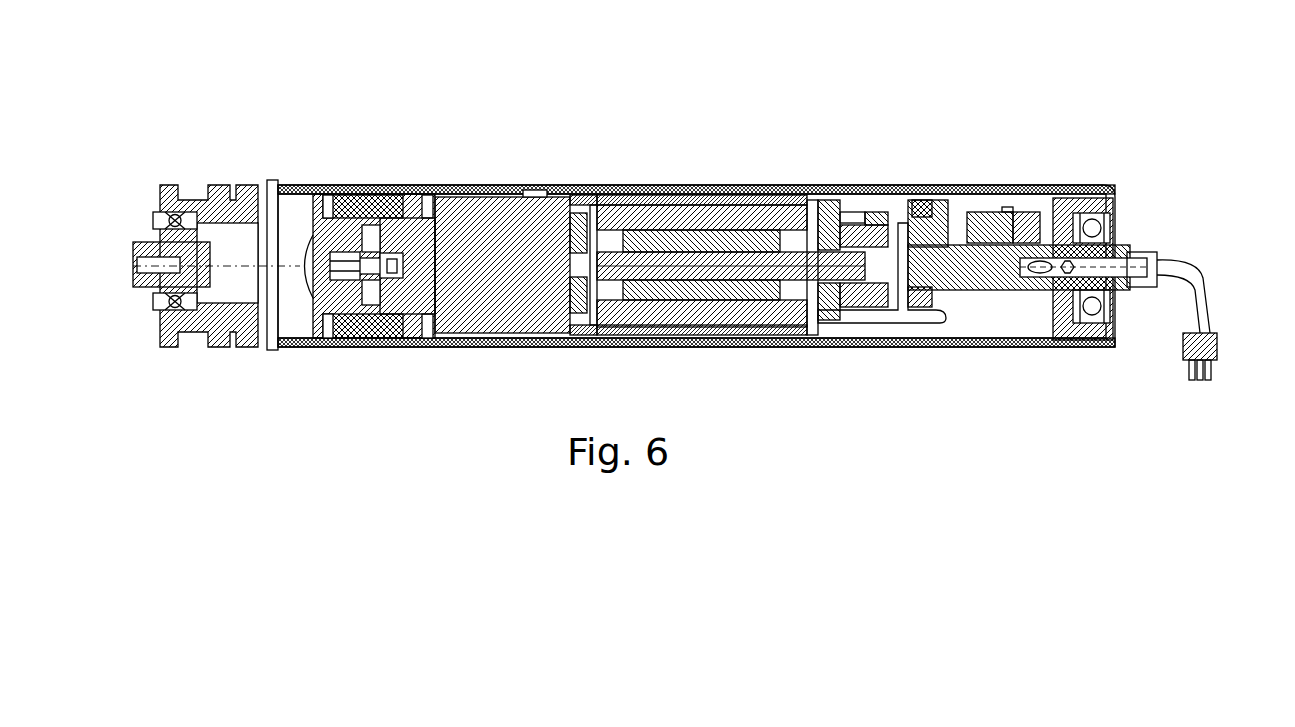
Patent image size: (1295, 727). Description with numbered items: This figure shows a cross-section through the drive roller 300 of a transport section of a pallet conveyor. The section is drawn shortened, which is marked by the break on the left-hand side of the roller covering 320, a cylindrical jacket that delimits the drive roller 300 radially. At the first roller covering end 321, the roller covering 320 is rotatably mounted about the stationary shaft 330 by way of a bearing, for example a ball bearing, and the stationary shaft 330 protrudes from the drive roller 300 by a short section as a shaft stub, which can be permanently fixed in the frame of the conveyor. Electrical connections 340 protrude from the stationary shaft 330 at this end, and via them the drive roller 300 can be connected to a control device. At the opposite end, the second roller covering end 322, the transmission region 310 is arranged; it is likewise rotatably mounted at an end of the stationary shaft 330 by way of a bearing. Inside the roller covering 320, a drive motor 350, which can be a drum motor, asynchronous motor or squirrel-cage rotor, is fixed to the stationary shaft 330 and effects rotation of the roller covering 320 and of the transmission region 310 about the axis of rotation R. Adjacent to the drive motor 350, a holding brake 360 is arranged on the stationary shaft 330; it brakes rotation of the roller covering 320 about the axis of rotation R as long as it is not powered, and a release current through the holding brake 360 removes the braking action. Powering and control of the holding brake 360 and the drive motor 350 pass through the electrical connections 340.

The drive roller 300 is at (686, 58).
The transmission region 310 is at (242, 362).
The roller covering 320 is at (1107, 357).
The first roller covering end 321 is at (1115, 200).
The second roller covering end 322 is at (240, 190).
The stationary shaft 330 is at (1135, 250).
The electrical connections 340 is at (1212, 338).
The drive motor 350 is at (693, 197).
The holding brake 360 is at (857, 197).
The axis of rotation R is at (493, 265).